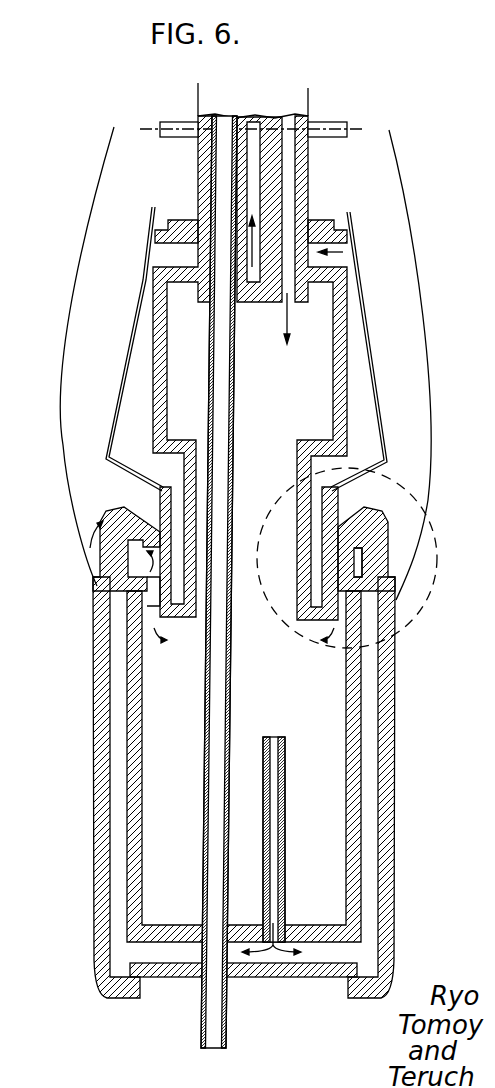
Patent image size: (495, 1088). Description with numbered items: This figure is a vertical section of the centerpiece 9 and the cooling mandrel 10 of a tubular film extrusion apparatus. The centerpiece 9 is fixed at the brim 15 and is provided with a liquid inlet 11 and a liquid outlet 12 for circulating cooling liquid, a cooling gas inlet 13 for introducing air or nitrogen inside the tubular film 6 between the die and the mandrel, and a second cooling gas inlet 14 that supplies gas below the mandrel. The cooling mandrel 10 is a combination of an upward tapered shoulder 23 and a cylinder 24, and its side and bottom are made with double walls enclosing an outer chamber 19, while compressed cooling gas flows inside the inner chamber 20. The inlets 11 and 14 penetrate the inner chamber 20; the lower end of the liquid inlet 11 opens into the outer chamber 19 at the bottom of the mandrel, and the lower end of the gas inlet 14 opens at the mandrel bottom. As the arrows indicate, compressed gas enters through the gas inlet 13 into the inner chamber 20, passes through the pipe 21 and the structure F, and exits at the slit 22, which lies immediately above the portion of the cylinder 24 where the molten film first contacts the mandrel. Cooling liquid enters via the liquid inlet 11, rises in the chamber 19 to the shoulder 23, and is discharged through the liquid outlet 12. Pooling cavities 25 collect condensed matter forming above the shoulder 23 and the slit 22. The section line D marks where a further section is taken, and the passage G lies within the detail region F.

The tubular film 6 is at (400, 178).
The centerpiece 9 is at (192, 102).
The cooling mandrel 10 is at (93, 681).
The liquid inlet 11 is at (284, 828).
The liquid outlet 12 is at (253, 195).
The cooling gas inlet 13 is at (292, 176).
The cooling gas inlet 14 is at (216, 829).
The brim 15 is at (345, 122).
The outer chamber 19 is at (355, 358).
The inner chamber 20 is at (300, 728).
The pipe 21 is at (368, 616).
The slit 22 is at (395, 557).
The shoulder 23 is at (357, 252).
The cylinder 24 is at (394, 682).
The pooling cavities 25 is at (323, 228).
The section line DD D is at (253, 130).
The structure F is at (424, 528).
The flow passage G is at (395, 572).